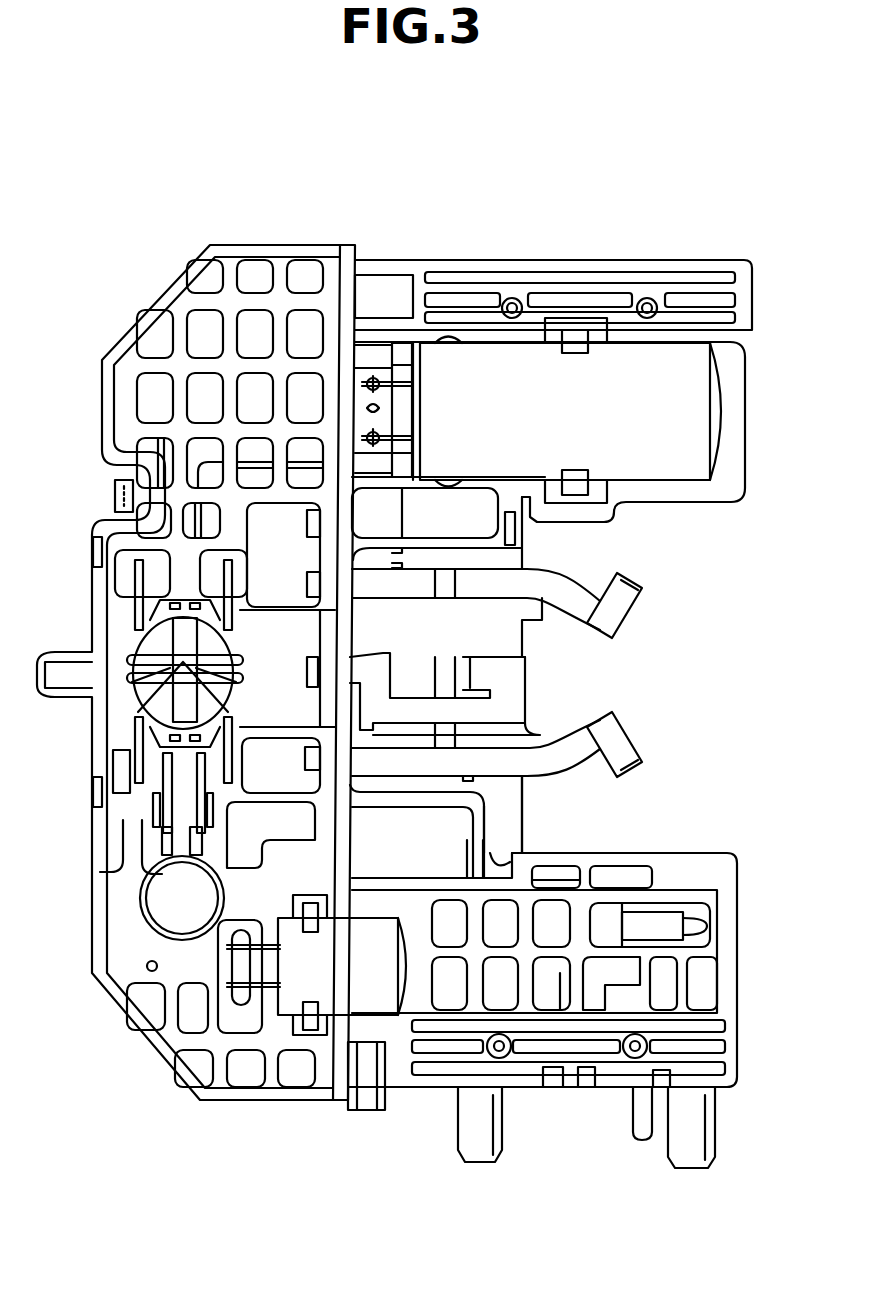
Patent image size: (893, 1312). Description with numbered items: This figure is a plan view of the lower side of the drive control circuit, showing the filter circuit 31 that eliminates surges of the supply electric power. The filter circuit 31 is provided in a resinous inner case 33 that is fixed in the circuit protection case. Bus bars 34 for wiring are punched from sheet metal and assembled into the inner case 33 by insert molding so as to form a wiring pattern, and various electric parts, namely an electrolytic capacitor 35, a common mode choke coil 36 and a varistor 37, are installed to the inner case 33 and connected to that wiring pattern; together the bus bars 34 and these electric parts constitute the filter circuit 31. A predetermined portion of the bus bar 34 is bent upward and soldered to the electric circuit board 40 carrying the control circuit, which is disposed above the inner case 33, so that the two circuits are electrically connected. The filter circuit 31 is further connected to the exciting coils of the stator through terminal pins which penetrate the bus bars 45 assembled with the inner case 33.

The filter circuit 31 is at (278, 244).
The inner case 33 is at (548, 258).
The bus bars 34 is at (247, 1075).
The electrolytic capacitor 35 is at (658, 415).
The common mode choke coil 36 is at (145, 636).
The varistor 37 is at (175, 905).
The electric circuit board 40 is at (513, 815).
The bus bars 45 is at (624, 600).